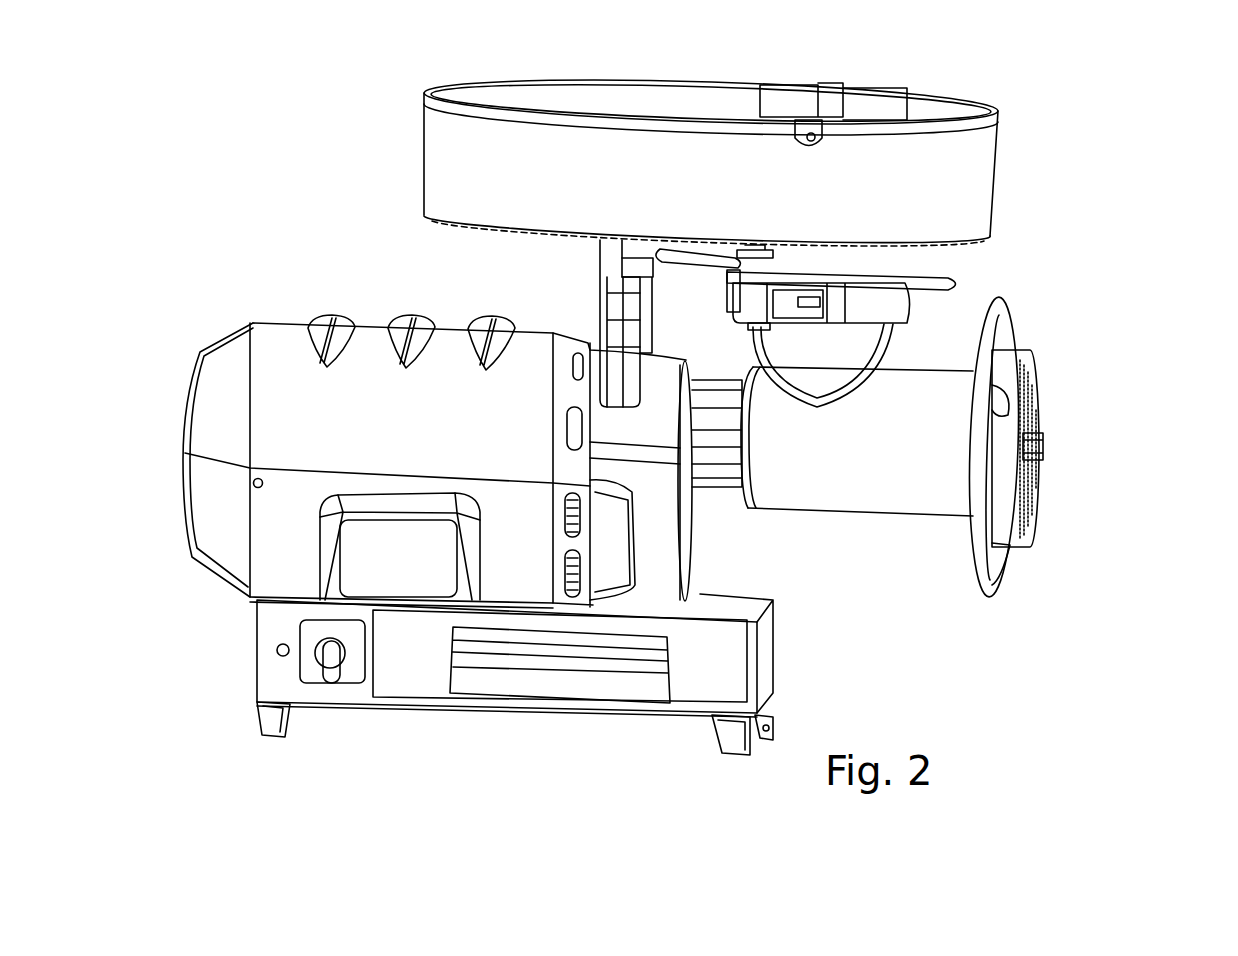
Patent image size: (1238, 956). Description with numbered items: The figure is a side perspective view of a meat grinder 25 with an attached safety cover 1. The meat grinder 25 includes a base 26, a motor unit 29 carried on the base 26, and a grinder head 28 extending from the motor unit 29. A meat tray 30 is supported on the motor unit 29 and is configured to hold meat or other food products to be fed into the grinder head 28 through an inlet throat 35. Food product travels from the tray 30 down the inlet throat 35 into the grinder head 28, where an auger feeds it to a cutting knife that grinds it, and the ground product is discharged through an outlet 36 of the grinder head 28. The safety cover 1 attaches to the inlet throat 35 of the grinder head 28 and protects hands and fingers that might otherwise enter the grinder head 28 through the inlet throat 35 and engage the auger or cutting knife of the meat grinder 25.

The meat grinder 25 is at (195, 178).
The meat tray 30 is at (477, 140).
The safety cover 1 is at (962, 263).
The motor unit 29 is at (285, 398).
The inlet throat 35 is at (830, 363).
The grinder head 28 is at (901, 622).
The outlet 36 is at (1078, 466).
The base 26 is at (417, 665).